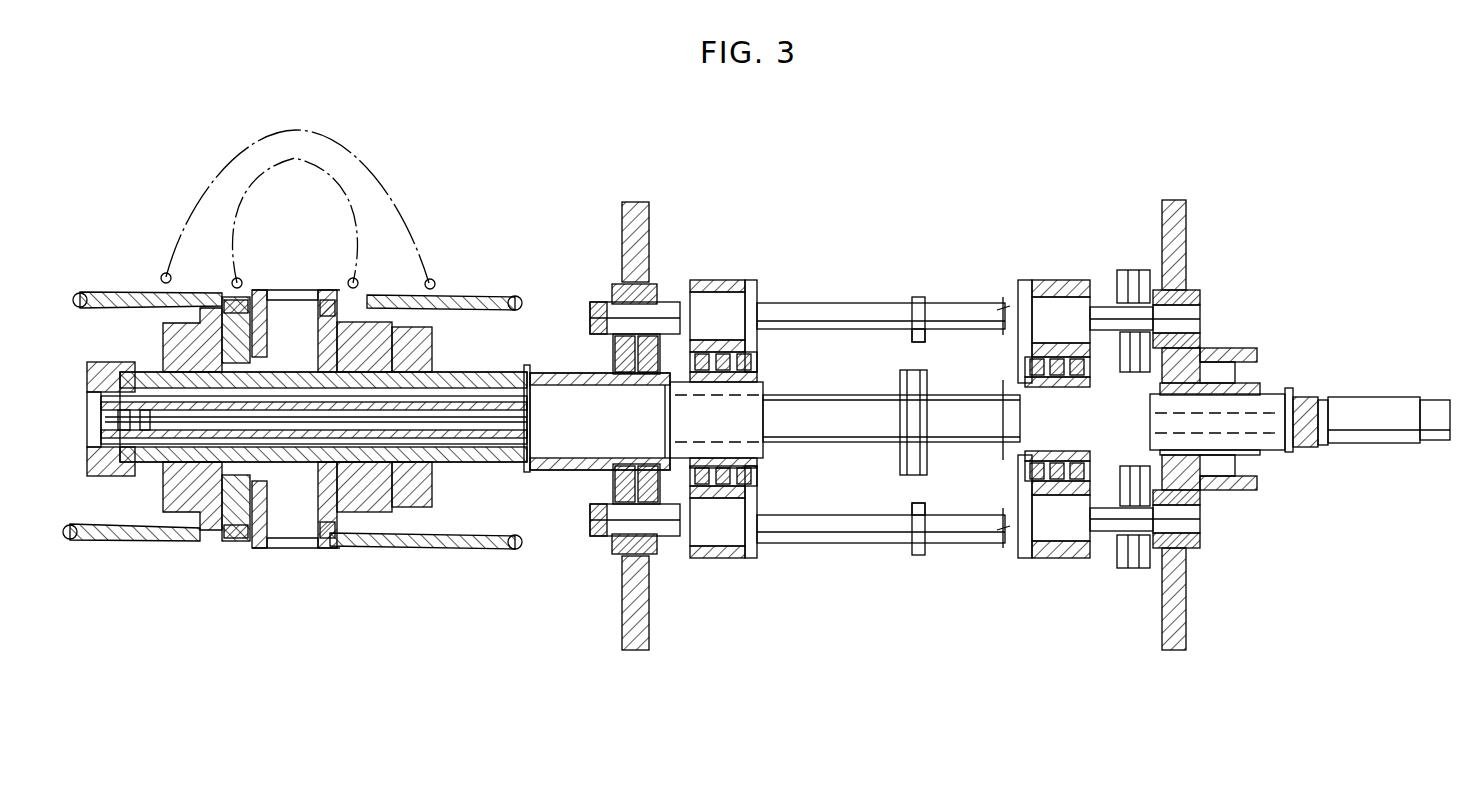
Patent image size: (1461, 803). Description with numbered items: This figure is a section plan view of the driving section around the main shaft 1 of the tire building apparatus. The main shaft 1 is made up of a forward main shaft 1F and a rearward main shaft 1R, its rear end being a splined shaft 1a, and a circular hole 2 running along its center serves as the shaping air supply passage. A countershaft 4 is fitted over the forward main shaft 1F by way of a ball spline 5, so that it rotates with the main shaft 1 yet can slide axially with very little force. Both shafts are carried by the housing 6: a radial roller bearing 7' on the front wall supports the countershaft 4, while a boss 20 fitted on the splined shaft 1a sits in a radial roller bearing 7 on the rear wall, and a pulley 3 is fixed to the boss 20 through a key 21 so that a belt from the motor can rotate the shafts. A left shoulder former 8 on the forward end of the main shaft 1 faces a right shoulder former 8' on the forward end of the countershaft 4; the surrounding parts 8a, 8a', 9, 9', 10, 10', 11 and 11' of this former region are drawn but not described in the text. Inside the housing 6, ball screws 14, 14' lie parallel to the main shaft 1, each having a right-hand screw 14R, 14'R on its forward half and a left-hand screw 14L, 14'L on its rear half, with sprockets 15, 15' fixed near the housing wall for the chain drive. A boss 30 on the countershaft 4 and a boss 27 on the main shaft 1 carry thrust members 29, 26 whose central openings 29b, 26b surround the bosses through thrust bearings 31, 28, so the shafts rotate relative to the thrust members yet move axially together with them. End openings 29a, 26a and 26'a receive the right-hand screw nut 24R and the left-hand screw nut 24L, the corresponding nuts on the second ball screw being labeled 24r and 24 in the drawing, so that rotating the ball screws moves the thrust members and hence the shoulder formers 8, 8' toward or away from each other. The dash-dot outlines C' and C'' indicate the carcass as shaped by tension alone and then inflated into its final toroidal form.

The main shaft 1 is at (884, 460).
The splined shaft 1a is at (1372, 398).
The forward main shaft 1F is at (885, 393).
The rearward main shaft 1R is at (1255, 465).
The circular hole (shaping air supply passage) 2 is at (497, 432).
The pulley 3 is at (1232, 345).
The countershaft (sleeve) 4 is at (545, 380).
The ball spline 5 is at (768, 392).
The housing 6 is at (652, 218).
The radial roller bearing 7 is at (1206, 394).
The radial roller bearing 7' is at (616, 419).
The left shoulder former 8 is at (298, 209).
The right shoulder former 8' is at (311, 223).
The wire ring 8a is at (287, 376).
The wire ring 8a' is at (298, 394).
The hub 9 is at (187, 419).
The hub 9' is at (410, 417).
The ring 10 is at (255, 386).
The ring 10' is at (370, 391).
The arm 11 is at (142, 379).
The arm 11' is at (426, 391).
The ball screw 14 is at (921, 291).
The right-hand screw 14R is at (832, 303).
The left-hand screw 14L is at (990, 303).
The ball screw 14' is at (914, 577).
The right-hand screw 14'R is at (881, 583).
The left-hand screw 14'L is at (981, 579).
The sprocket 15 is at (1125, 288).
The sprocket 15' is at (1128, 558).
The boss 20 is at (1310, 385).
The key 21 is at (1275, 385).
The bearing 24 is at (1080, 560).
The right-hand screw nut 24R is at (748, 300).
The left-hand screw nut 24L is at (1078, 300).
The bearing plate 24r is at (760, 560).
The thrust member 26 is at (1057, 374).
The opening 26a is at (1024, 300).
The opening 26'a is at (1044, 553).
The opening 26b is at (1022, 395).
The boss 27 is at (1015, 470).
The thrust bearing 28 is at (1025, 490).
The thrust member 29 is at (722, 280).
The opening 29a is at (690, 315).
The opening 29b is at (766, 385).
The boss 30 is at (765, 460).
The thrust bearing 31 is at (760, 480).
The carcass shaped form C' is at (411, 160).
The toroidal carcass form C'' is at (329, 96).